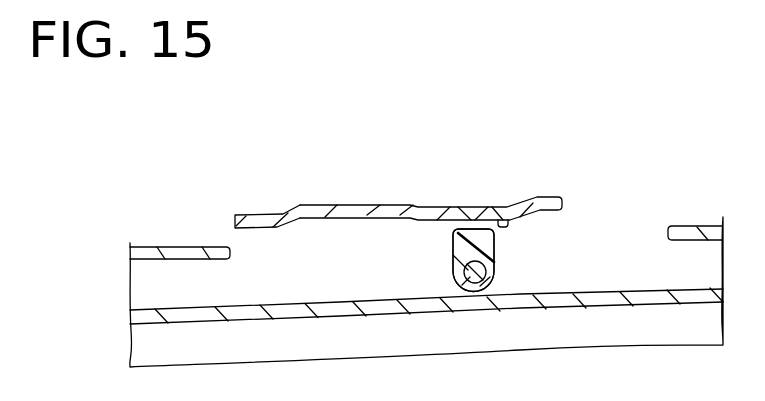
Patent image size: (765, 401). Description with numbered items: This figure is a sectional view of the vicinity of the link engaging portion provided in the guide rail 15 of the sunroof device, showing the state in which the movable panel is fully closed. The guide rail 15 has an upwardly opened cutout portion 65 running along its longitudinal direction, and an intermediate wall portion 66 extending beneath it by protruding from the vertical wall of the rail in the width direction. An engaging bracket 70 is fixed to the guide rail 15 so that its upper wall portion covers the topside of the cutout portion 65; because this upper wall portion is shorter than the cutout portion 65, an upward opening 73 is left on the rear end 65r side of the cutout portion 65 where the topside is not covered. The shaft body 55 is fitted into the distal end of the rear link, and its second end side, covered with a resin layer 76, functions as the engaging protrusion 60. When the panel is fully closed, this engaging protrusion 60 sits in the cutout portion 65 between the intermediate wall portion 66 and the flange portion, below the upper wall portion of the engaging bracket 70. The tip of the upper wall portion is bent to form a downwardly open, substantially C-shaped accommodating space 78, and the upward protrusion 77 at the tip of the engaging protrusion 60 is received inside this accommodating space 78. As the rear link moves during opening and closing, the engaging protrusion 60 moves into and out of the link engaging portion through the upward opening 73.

The guide rail 15 is at (178, 247).
The cutout portion 65 is at (232, 246).
The rear end of the cutout portion 65r is at (668, 230).
The engaging bracket 70 is at (363, 205).
The upward protrusion 77 is at (461, 205).
The accommodating space 78 is at (505, 207).
The upward opening 73 is at (637, 195).
The engaging protrusion 60 is at (453, 261).
The shaft body 55 is at (495, 267).
The resin layer 76 is at (459, 293).
The intermediate wall portion 66 is at (283, 315).